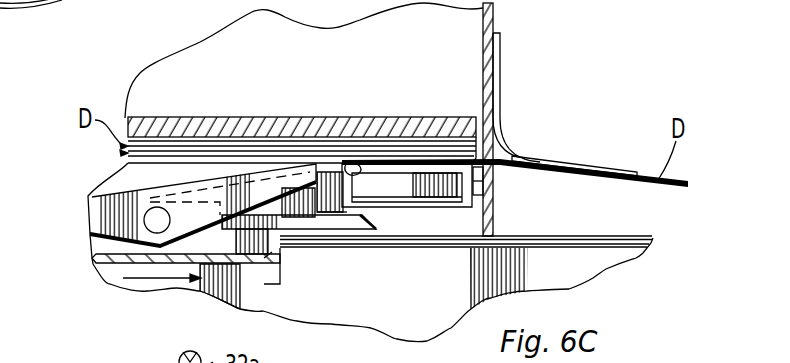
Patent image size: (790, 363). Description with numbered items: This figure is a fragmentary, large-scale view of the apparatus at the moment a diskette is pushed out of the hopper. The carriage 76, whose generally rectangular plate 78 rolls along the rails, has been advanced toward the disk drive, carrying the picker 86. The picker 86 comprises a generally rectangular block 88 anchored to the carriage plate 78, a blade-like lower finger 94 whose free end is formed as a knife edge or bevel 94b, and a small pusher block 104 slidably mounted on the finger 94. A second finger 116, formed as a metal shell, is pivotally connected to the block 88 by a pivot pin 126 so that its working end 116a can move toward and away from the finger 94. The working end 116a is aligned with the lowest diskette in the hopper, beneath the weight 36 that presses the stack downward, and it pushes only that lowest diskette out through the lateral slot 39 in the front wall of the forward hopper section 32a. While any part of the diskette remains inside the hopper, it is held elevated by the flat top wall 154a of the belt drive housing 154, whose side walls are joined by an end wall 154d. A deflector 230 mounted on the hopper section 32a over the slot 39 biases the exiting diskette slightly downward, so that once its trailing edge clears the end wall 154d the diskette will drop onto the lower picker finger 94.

The weight 36 is at (308, 128).
The second finger 116 is at (204, 176).
The pusher block 104 is at (282, 200).
The working end 116a is at (364, 158).
The top wall 154a is at (417, 158).
The forward hopper section 32a is at (565, 30).
The housing 154 is at (518, 152).
The deflector 230 is at (582, 163).
The end wall 154d is at (548, 205).
The lateral slot 39 is at (483, 218).
The finger 94 is at (329, 226).
The bevel 94b is at (371, 223).
The block 88 is at (204, 264).
The carriage 76 is at (147, 268).
The carriage plate 78 is at (93, 268).
The pivot pin 126 is at (147, 223).
The picker 86 is at (128, 187).